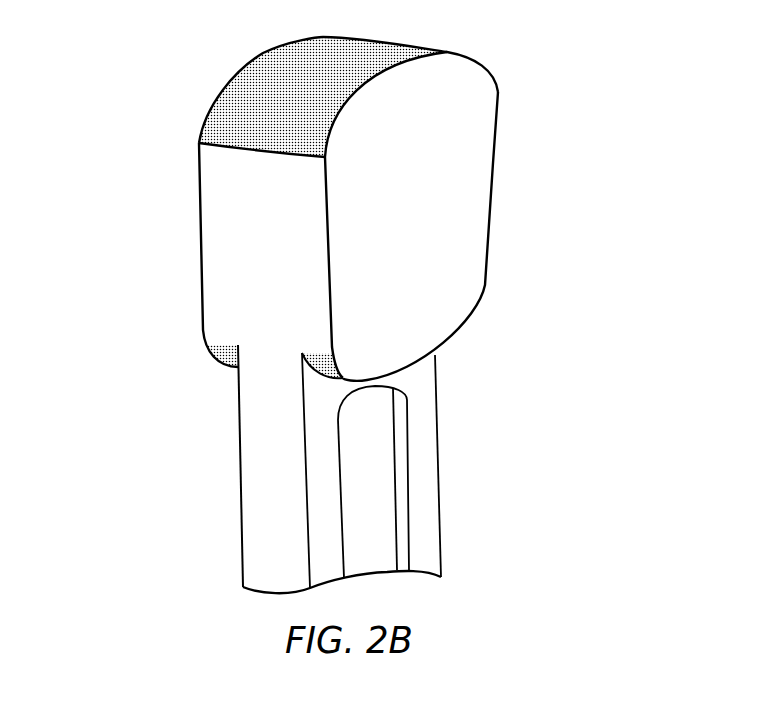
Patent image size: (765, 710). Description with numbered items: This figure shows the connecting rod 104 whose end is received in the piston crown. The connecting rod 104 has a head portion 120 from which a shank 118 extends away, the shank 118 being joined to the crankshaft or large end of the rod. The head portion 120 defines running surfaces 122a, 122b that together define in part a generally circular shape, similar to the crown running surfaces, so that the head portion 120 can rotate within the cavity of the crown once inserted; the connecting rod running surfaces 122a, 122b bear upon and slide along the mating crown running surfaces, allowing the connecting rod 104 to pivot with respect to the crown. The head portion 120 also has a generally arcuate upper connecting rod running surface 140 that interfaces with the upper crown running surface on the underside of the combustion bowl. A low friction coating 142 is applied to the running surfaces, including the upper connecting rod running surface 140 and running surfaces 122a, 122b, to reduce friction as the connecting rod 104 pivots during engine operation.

The connecting rod 104 is at (142, 187).
The shank 118 is at (430, 477).
The head portion 120 is at (520, 52).
The running surface 122a is at (227, 370).
The running surface 122b is at (333, 373).
The upper connecting rod running surface 140 is at (268, 72).
The low friction coating 142 is at (350, 47).